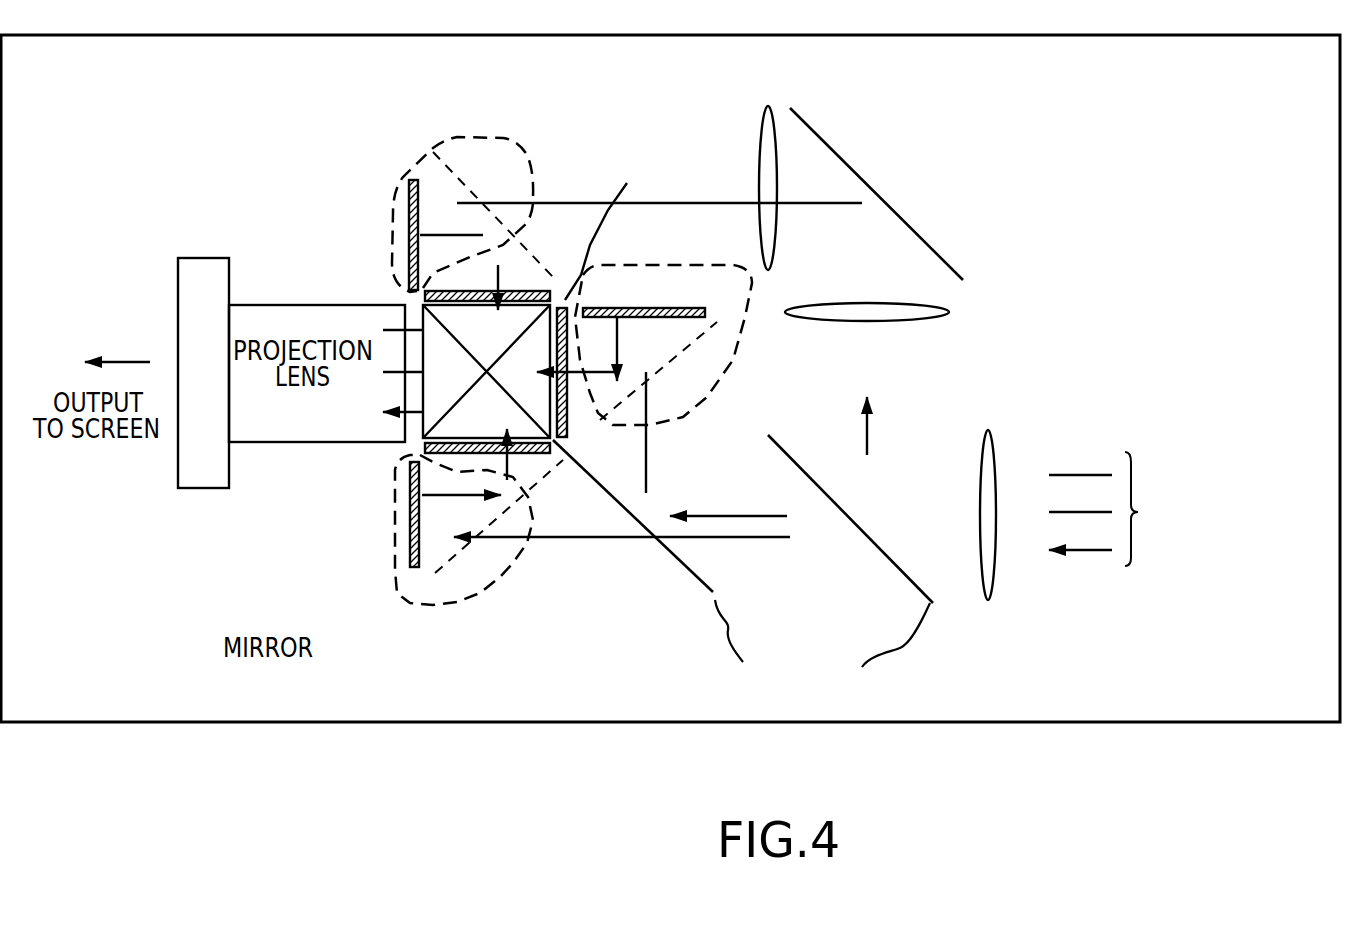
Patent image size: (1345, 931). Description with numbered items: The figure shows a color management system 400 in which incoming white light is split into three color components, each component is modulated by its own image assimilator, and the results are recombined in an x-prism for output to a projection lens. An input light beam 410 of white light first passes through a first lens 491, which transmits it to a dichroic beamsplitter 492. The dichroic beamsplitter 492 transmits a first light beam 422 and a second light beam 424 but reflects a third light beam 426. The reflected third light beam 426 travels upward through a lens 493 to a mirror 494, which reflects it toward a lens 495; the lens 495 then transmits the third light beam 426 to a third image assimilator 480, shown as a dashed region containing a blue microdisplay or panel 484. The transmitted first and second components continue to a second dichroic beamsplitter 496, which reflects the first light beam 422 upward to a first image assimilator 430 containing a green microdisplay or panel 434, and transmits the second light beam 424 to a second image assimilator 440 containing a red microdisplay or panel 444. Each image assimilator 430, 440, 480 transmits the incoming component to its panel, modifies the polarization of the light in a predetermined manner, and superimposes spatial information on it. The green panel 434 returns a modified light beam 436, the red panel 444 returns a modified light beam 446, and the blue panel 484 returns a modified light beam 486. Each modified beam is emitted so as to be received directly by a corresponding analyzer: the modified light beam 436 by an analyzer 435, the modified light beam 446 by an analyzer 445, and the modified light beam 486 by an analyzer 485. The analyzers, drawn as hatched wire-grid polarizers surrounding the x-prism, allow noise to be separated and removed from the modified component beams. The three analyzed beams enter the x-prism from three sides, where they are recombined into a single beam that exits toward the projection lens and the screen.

The color management system 400 is at (1204, 107).
The input light beam 410 is at (1183, 530).
The first light beam 422 is at (713, 513).
The second light beam 424 is at (592, 538).
The third light beam 426 is at (677, 203).
The first image assimilator 430 is at (733, 373).
The green microdisplay or panel 434 is at (705, 312).
The analyzer 435 is at (568, 425).
The modified light beam 436 is at (603, 357).
The second image assimilator 440 is at (495, 580).
The red microdisplay or panel 444 is at (416, 569).
The analyzer 445 is at (425, 447).
The modified light beam 446 is at (520, 485).
The third image assimilator 480 is at (530, 150).
The blue microdisplay or panel 484 is at (409, 186).
The analyzer 485 is at (556, 302).
The modified light beam 486 is at (503, 281).
The first lens 491 is at (993, 431).
The dichroic beamsplitter 492 is at (887, 548).
The lens 493 is at (950, 312).
The mirror 494 is at (913, 228).
The lens 495 is at (770, 108).
The dichroic beamsplitter 496 is at (715, 590).